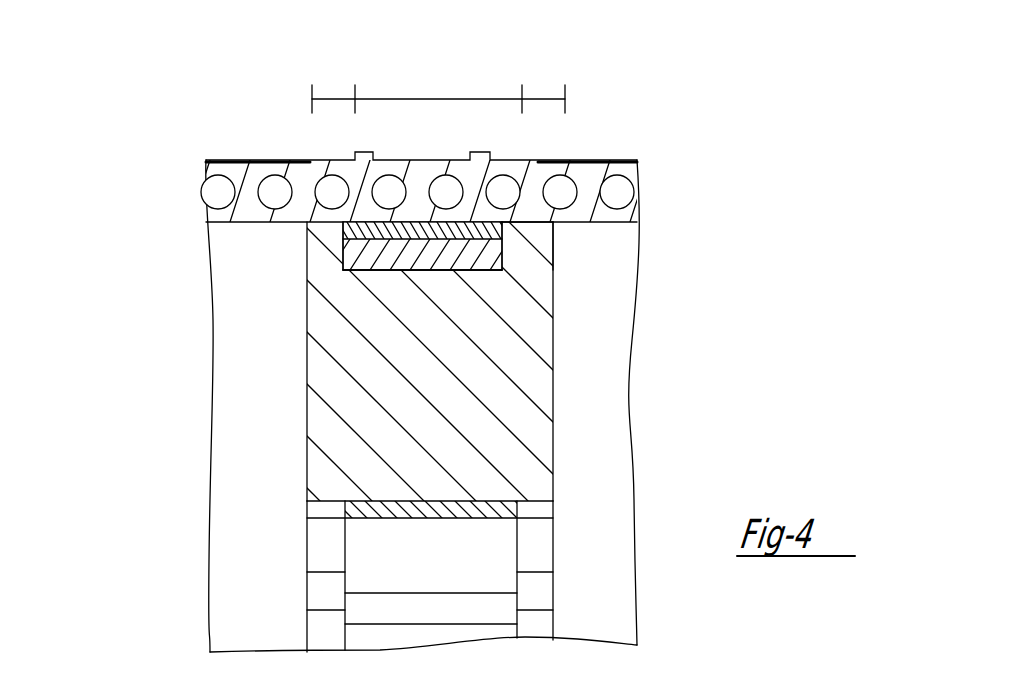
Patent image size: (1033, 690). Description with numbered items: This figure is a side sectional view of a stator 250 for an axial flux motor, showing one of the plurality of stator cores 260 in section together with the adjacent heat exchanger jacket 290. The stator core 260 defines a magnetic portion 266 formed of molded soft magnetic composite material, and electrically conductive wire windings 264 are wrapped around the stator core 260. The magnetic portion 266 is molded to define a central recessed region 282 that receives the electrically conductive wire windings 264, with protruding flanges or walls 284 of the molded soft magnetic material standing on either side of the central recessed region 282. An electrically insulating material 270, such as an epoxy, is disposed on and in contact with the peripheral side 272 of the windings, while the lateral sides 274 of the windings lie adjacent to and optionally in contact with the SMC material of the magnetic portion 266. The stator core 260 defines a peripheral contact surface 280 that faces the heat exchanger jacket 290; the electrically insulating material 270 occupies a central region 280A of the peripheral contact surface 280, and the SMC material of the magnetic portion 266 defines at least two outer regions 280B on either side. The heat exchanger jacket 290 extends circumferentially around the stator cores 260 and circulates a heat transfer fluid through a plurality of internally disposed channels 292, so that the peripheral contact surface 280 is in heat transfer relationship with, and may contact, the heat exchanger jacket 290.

The stator 250 is at (140, 145).
The stator core 260 is at (323, 419).
The electrically conductive wire windings 264 is at (440, 270).
The magnetic portion 266 is at (540, 390).
The electrically insulating material 270 is at (553, 228).
The peripheral side 272 is at (435, 236).
The lateral sides 274 is at (343, 257).
The peripheral contact surface 280 is at (542, 215).
The central region 280A is at (402, 99).
The outer regions 280B is at (332, 99).
The central recessed region 282 is at (397, 270).
The protruding flanges or walls 284 is at (340, 238).
The heat exchanger jacket 290 is at (207, 166).
The internally disposed channels 292 is at (270, 186).